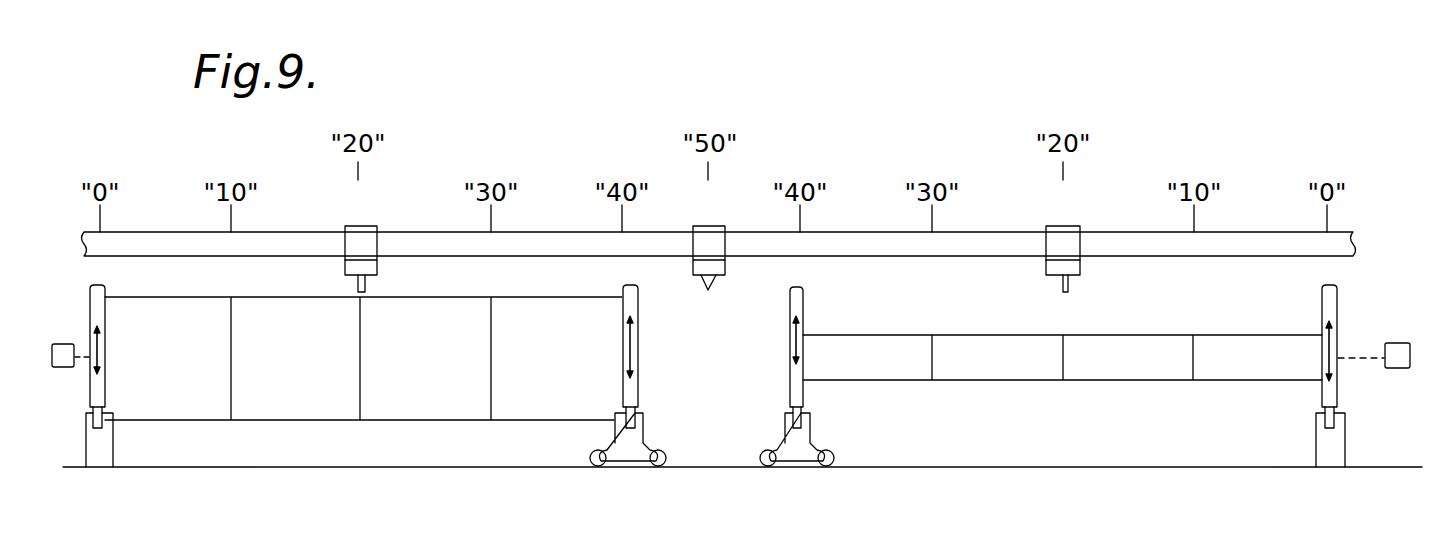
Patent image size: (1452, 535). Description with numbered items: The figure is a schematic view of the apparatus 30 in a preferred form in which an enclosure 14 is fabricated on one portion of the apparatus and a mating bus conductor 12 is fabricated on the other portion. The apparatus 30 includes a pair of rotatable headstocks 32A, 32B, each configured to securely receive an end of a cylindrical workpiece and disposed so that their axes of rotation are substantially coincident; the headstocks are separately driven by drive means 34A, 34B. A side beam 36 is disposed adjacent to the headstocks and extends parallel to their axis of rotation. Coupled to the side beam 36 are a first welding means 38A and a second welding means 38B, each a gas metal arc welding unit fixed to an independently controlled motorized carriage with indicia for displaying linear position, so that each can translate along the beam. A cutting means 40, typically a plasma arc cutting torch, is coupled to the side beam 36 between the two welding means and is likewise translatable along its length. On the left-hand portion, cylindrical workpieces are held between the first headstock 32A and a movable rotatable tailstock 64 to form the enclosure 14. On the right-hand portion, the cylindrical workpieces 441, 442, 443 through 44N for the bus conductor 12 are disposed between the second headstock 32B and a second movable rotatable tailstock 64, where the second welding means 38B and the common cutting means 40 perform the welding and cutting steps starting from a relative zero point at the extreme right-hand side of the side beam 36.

The bus conductor 12 is at (1078, 385).
The enclosure 14 is at (376, 424).
The apparatus 30 is at (724, 508).
The first rotatable headstock 32A is at (91, 339).
The second rotatable headstock 32B is at (1337, 303).
The first drive means 34A is at (70, 367).
The second drive means 34B is at (1393, 368).
The side beam 36 is at (566, 248).
The first welding means 38A is at (357, 245).
The second welding means 38B is at (1066, 236).
The cutting means 40 is at (710, 244).
The first cylindrical workpiece 441 is at (157, 404).
The second cylindrical workpiece 442 is at (278, 404).
The third cylindrical workpiece 443 is at (420, 404).
The Nth cylindrical workpiece 44N is at (518, 404).
The movable rotatable tailstock 64 is at (640, 327).